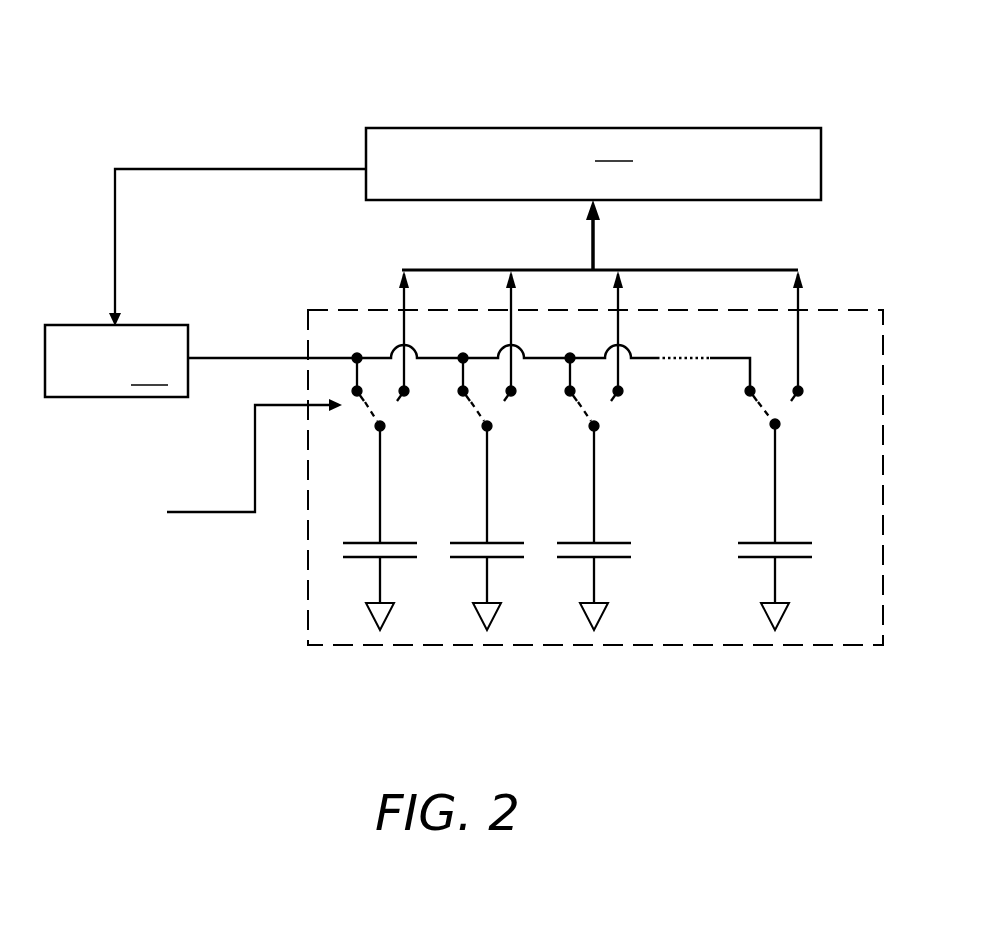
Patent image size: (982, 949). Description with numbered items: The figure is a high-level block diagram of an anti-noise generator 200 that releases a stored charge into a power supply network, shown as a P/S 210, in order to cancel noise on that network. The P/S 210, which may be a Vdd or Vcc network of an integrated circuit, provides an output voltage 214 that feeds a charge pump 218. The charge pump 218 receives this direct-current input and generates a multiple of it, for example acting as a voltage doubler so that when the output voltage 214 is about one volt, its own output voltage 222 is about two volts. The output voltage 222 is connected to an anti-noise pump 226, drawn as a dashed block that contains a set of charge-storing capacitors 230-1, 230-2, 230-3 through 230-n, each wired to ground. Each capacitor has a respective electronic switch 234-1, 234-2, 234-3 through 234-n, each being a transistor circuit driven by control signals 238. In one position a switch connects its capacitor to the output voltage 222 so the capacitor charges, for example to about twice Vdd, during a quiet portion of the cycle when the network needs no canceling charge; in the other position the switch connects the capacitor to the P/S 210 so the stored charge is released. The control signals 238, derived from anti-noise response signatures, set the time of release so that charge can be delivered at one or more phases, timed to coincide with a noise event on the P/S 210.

The anti-noise generator 200 is at (250, 78).
The P/S 210 is at (593, 199).
The output voltage 214 is at (210, 169).
The charge pump 218 is at (116, 361).
The output voltage 222 is at (205, 358).
The anti-noise pump 226 is at (597, 646).
The capacitor 230-1 is at (390, 543).
The capacitor 230-2 is at (497, 543).
The capacitor 230-3 is at (604, 543).
The capacitor 230-n is at (785, 543).
The electronic switch 234-1 is at (390, 410).
The electronic switch 234-2 is at (497, 410).
The electronic switch 234-3 is at (604, 410).
The electronic switch 234-n is at (787, 408).
The control signals 238 is at (203, 512).